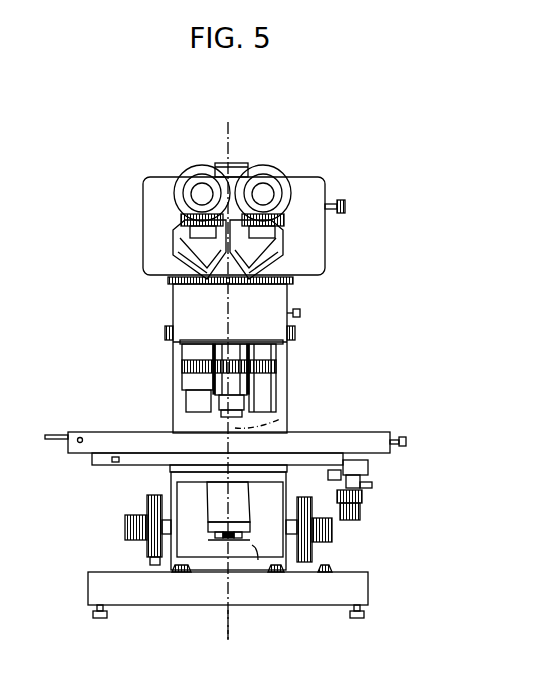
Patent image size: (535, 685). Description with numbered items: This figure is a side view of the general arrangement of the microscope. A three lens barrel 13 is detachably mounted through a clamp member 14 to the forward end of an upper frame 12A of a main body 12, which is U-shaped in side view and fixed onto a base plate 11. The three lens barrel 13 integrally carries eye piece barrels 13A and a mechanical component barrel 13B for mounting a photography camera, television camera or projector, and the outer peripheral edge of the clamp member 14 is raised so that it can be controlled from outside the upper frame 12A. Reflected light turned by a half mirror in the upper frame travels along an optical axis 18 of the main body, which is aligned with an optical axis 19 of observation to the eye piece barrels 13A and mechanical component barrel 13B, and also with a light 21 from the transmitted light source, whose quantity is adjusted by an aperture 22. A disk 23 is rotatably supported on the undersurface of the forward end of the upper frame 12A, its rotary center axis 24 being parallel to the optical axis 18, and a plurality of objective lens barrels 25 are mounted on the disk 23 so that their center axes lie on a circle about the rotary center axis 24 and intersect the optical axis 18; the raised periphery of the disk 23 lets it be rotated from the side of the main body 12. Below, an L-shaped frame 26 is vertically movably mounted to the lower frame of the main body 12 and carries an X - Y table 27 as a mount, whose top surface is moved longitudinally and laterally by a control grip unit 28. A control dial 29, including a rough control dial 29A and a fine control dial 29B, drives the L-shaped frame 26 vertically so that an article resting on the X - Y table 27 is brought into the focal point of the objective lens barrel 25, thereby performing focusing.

The base plate 11 is at (177, 592).
The main body 12 is at (290, 395).
The upper frame 12A is at (178, 290).
The three lens barrel 13 is at (305, 185).
The eye piece barrels 13A is at (295, 255).
The mechanical component barrel 13B is at (246, 162).
The clamp member 14 is at (296, 282).
The optical axis of the main body 18 is at (277, 420).
The optical axis of observation 19 is at (228, 133).
The light emitted from light source for transmitted light 21 is at (230, 622).
The aperture 22 is at (255, 545).
The disk 23 is at (165, 332).
The rotary center axis 24 is at (297, 332).
The objective lens barrels 25 is at (190, 372).
The L-shaped frame 26 is at (183, 472).
The X - Y table 27 is at (378, 432).
The control grip unit 28 is at (365, 498).
The control dial 29 is at (118, 526).
The rough control dial 29A is at (302, 505).
The fine control dial 29B is at (325, 533).